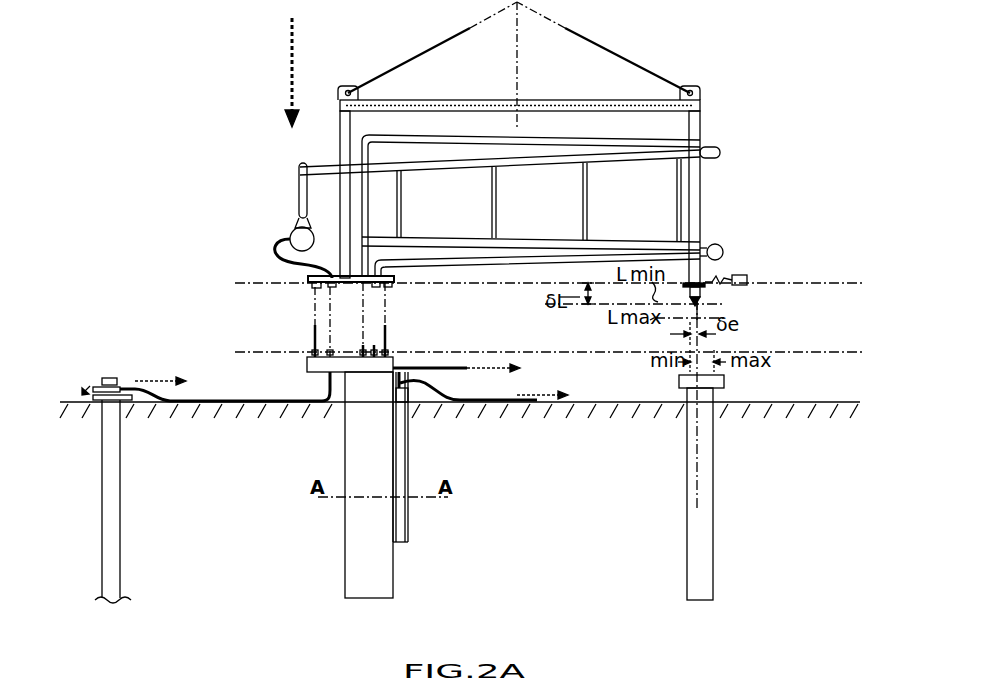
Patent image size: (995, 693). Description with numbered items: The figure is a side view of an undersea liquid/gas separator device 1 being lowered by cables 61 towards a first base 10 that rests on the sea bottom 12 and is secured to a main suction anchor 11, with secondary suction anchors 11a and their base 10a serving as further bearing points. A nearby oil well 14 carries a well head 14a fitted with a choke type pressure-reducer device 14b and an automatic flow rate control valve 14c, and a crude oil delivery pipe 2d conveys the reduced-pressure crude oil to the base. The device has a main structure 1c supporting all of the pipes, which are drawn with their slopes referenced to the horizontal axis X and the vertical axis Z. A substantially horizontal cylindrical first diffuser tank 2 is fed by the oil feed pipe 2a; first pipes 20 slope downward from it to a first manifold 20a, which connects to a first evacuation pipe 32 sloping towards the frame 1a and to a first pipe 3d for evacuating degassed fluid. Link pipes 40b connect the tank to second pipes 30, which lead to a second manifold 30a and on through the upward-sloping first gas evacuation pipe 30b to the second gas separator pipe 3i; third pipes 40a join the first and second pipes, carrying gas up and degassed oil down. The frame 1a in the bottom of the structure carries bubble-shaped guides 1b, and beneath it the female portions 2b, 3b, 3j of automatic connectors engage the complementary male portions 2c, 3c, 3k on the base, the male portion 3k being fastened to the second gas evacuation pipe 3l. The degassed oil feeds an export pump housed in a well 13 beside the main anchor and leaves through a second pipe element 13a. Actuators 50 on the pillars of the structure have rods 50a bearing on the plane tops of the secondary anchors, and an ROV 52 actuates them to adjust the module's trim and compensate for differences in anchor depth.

The undersea liquid/gas separator device 1 is at (792, 211).
The frame 1a is at (306, 278).
The bubble-shaped guides 1b is at (312, 288).
The main structure 1c is at (703, 104).
The first diffuser tank 2 is at (296, 230).
The oil feed pipe 2a is at (282, 246).
The female portion of automatic connector 2b is at (315, 300).
The male portion of automatic connector 2c is at (330, 350).
The crude oil delivery pipe 2d is at (215, 400).
The female portion of automatic connector 3b is at (383, 288).
The male portion of automatic connector 3c is at (376, 350).
The first pipe for evacuating degassed fluid 3d is at (410, 362).
The second gas separator pipe 3i is at (368, 222).
The female portion of automatic connector 3j is at (385, 300).
The male portion of automatic connector 3k is at (363, 350).
The second gas evacuation pipe 3l is at (470, 366).
The first evacuation pipe 32 is at (462, 268).
The first base 10 is at (305, 365).
The base 10a is at (724, 382).
The main suction anchor 11 is at (345, 558).
The secondary suction anchor 11a is at (713, 542).
The sea bottom 12 is at (820, 404).
The well 13 is at (408, 533).
The second pipe element for evacuating degassed fluid 13a is at (438, 405).
The oil well 14 is at (118, 521).
The well head 14a is at (100, 378).
The choke type pressure-reducer device 14b is at (86, 385).
The automatic flow rate control valve 14c is at (115, 378).
The first pipes 20 is at (715, 244).
The first manifold 20a is at (723, 252).
The second pipes 30 is at (500, 166).
The second manifold 30a is at (722, 153).
The first gas evacuation pipe 30b is at (462, 137).
The third pipes 40a is at (588, 200).
The link pipes 40b is at (299, 186).
The actuators 50 is at (710, 290).
The actuator rods 50a is at (705, 305).
The ROV 52 is at (748, 276).
The cables 61 is at (427, 51).
The X axis X is at (793, 352).
The Z axis Z is at (520, 57).